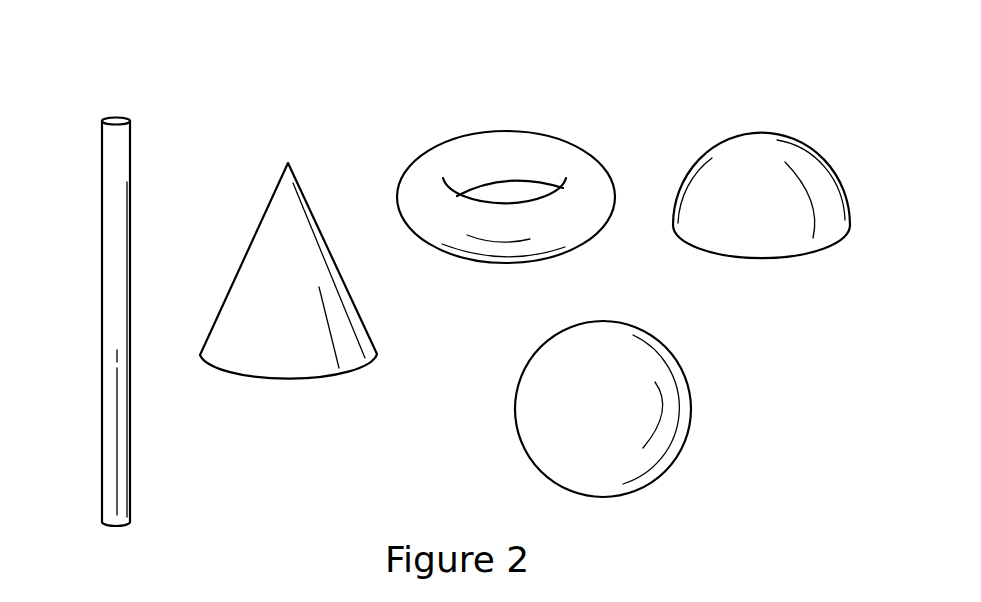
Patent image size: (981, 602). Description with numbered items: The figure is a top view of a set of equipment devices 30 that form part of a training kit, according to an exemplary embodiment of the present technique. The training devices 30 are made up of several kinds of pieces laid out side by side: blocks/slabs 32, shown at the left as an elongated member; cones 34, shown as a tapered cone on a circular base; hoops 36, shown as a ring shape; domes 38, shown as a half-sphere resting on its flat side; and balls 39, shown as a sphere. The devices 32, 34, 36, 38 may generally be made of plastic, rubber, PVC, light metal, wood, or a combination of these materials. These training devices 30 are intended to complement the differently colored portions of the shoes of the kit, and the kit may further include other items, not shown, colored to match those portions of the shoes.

The set of equipment devices 30 is at (218, 70).
The blocks/slabs 32 is at (108, 143).
The cones 34 is at (243, 288).
The hoops 36 is at (448, 147).
The domes 38 is at (700, 162).
The balls 39 is at (525, 385).